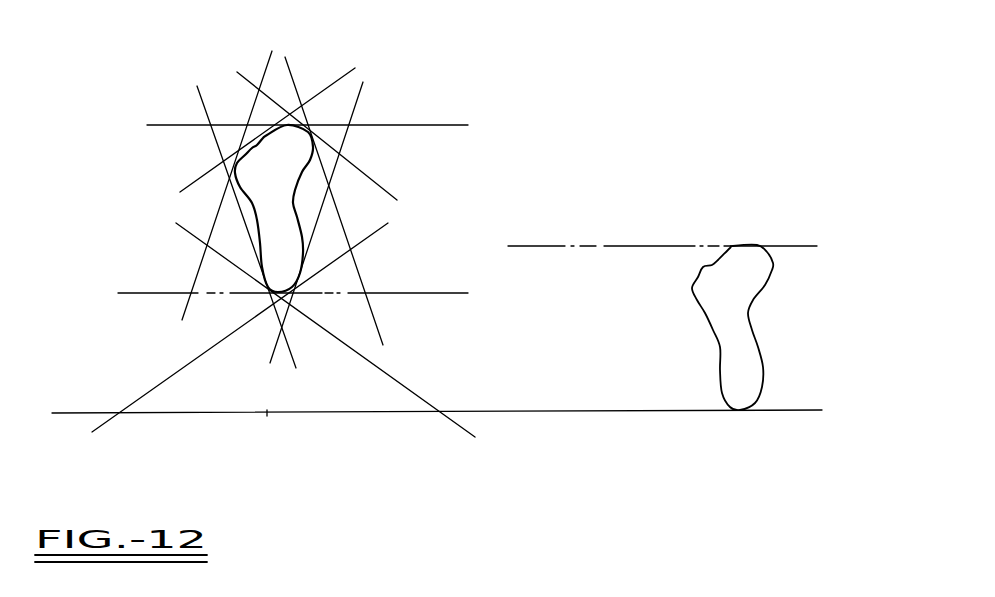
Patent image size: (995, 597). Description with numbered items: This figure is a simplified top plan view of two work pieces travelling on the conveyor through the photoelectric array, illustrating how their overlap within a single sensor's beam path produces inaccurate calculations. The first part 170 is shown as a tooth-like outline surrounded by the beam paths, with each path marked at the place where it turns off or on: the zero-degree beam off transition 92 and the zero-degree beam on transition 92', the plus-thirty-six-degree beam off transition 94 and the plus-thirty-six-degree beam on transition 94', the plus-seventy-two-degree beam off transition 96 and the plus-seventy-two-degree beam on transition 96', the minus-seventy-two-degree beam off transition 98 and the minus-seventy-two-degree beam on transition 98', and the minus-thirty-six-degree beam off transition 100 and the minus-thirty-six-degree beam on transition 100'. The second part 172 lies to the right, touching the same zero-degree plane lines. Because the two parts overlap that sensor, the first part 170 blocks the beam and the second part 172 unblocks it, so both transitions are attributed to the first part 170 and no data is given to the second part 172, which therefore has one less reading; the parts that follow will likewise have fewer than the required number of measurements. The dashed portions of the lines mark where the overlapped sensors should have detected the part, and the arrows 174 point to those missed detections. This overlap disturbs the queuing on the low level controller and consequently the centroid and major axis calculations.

The 0° beam off transition 92 is at (498, 163).
The 0° beam on transition 92' is at (437, 378).
The +36° beam off transition 94 is at (296, 108).
The +36° beam on transition 94' is at (240, 327).
The +72° beam off transition 96 is at (195, 185).
The +72° beam on transition 96' is at (365, 222).
The −72° beam off transition 98 is at (334, 176).
The −72° beam on transition 98' is at (274, 244).
The −36° beam off transition 100 is at (356, 139).
The −36° beam on transition 100' is at (339, 330).
The first part 170 is at (267, 178).
The second part 172 is at (722, 293).
The direction of movement arrow 174 is at (393, 286).